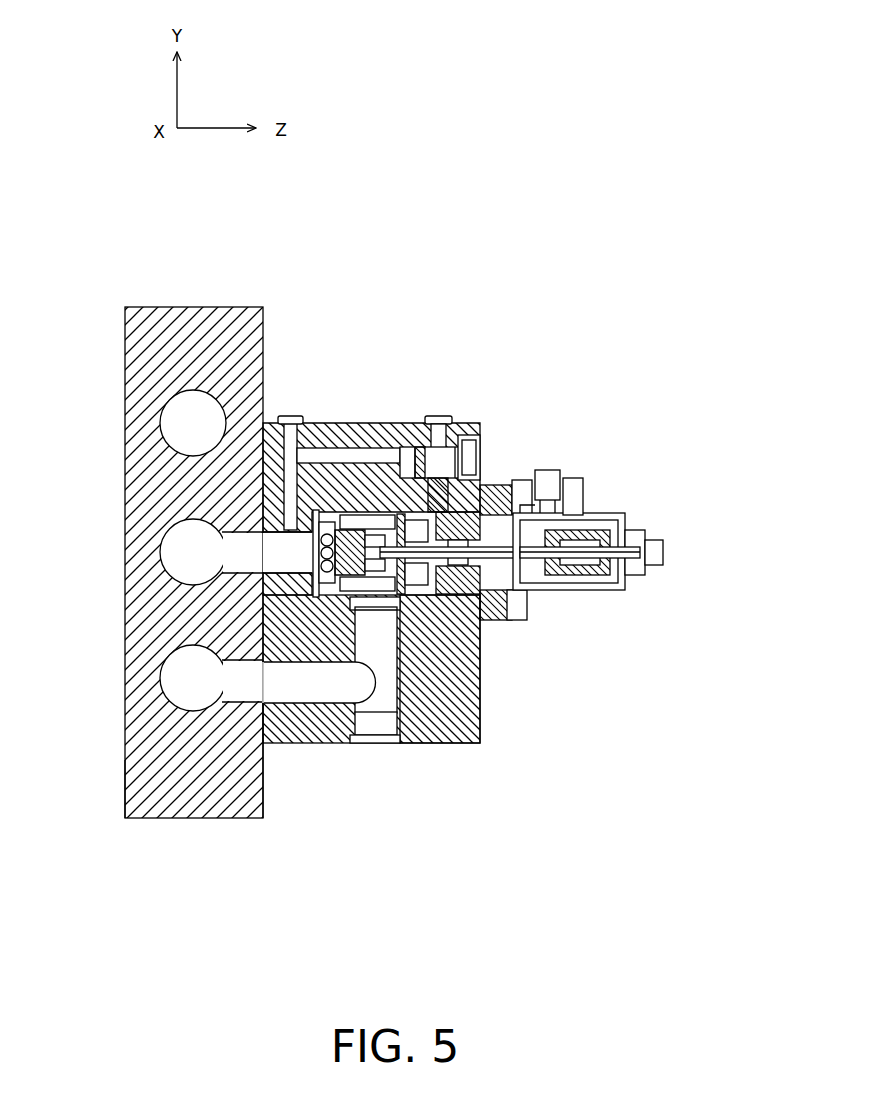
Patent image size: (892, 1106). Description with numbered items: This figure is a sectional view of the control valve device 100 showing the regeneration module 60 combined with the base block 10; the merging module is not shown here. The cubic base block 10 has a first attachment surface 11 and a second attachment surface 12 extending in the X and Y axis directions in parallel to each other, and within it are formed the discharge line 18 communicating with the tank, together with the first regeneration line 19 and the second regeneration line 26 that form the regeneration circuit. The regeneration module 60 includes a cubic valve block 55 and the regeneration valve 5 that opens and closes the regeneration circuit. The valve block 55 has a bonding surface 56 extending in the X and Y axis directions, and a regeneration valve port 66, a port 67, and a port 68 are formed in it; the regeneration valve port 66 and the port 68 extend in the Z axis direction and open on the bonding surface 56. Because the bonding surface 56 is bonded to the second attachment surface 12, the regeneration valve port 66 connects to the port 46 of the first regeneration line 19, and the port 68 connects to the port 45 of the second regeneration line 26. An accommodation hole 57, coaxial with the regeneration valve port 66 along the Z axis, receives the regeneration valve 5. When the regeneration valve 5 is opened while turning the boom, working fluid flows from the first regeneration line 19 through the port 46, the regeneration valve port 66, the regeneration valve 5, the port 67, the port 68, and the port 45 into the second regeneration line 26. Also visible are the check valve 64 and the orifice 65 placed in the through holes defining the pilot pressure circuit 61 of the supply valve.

The regeneration valve 5 is at (565, 592).
The base block 10 is at (188, 317).
The first attachment surface 11 is at (125, 787).
The second attachment surface 12 is at (286, 745).
The discharge line 18 is at (193, 423).
The first regeneration line 19 is at (193, 552).
The second regeneration line 26 is at (193, 678).
The port of the second regeneration line 45 is at (242, 681).
The port of the first regeneration line 46 is at (242, 552).
The valve block 55 is at (455, 740).
The bonding surface 56 is at (263, 722).
The accommodation hole 57 is at (481, 622).
The regeneration module 60 is at (471, 420).
The pilot pressure circuit 61 is at (337, 452).
The check valve 64 is at (427, 425).
The orifice 65 is at (462, 462).
The regeneration valve port 66 is at (287, 552).
The port 67 is at (375, 670).
The port 68 is at (319, 682).
The control valve device 100 is at (532, 333).